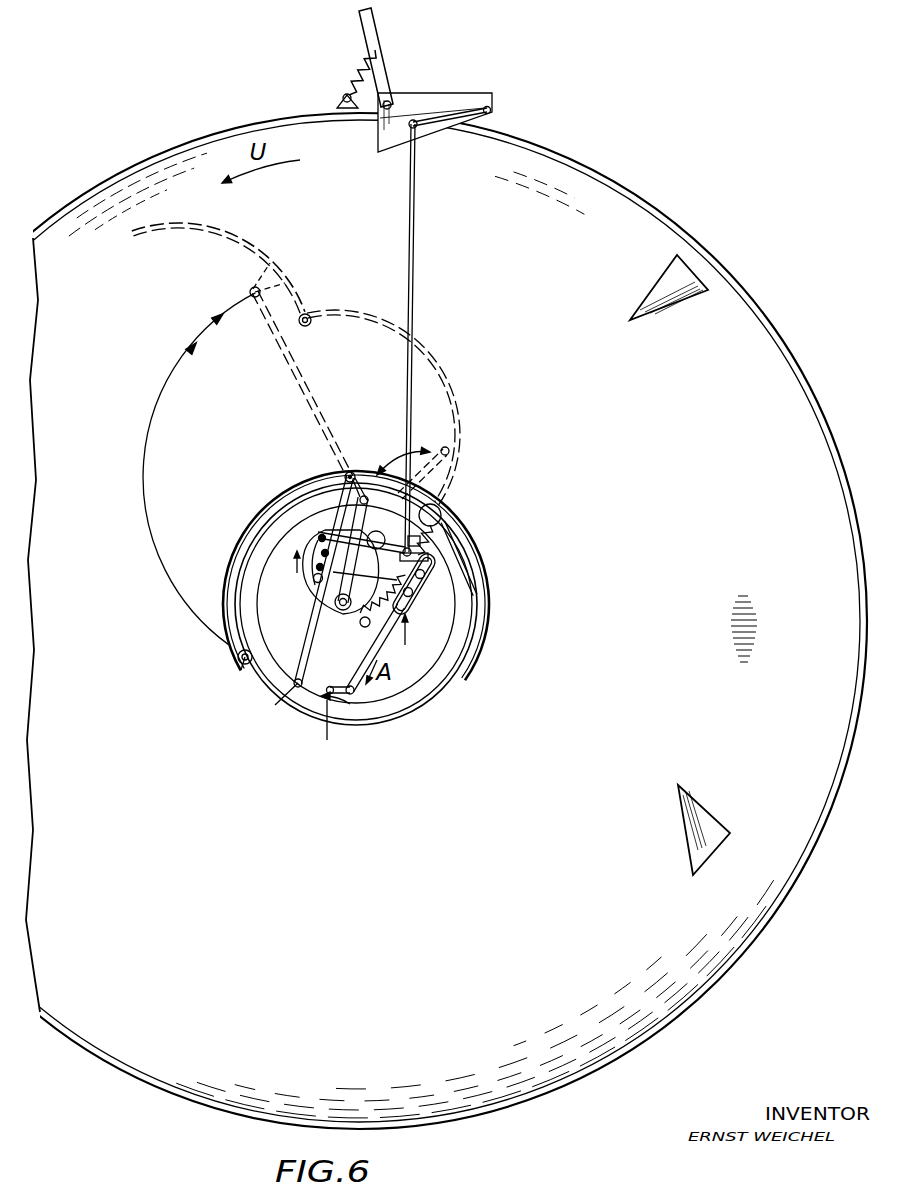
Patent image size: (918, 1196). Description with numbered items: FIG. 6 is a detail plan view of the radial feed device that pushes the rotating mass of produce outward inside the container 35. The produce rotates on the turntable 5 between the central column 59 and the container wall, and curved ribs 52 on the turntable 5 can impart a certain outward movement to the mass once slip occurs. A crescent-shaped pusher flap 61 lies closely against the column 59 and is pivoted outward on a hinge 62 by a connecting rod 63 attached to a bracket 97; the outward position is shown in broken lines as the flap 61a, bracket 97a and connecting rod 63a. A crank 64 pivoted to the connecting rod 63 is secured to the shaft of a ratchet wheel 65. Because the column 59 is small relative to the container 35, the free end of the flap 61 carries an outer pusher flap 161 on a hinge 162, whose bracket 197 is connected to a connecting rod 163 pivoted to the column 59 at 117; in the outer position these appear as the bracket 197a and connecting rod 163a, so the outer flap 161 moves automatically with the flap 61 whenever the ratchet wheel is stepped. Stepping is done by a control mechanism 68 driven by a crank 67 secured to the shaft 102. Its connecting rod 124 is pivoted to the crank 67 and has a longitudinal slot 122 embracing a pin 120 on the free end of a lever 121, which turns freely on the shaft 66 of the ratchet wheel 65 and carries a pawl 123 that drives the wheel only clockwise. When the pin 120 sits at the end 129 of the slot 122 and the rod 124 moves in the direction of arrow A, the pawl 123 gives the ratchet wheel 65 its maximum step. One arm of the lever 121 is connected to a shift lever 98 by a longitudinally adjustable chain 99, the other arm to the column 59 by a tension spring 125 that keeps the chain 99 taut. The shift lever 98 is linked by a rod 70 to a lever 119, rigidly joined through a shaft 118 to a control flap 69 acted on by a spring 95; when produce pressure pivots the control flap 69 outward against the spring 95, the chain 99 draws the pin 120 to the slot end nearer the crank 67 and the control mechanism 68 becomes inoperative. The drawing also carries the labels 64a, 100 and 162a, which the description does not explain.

The container 35 is at (780, 358).
The turntable 5 is at (660, 633).
The curved ribs 52 is at (668, 303).
The column 59 is at (452, 700).
The pusher flap 61 is at (238, 592).
The pusher flap in outward position 61a is at (437, 372).
The hinge 62 is at (440, 512).
The connecting rod 63 is at (342, 520).
The connecting rod in outward position 63a is at (440, 472).
The crank 64 is at (328, 594).
The lever arm 64a is at (423, 548).
The ratchet wheel 65 is at (334, 602).
The shaft of the ratchet wheel 66 is at (313, 580).
The crank 67 is at (348, 694).
The control mechanism 68 is at (418, 631).
The control flap 69 is at (446, 132).
The rod 70 is at (414, 232).
The spring 95 is at (352, 90).
The bracket 97 is at (364, 494).
The bracket in outward position 97a is at (449, 450).
The shift lever 98 is at (317, 533).
The longitudinally adjustable chain 99 is at (300, 555).
The cam plate 100 is at (333, 525).
The shaft 102 is at (327, 741).
The pivot on the column 117 is at (349, 472).
The shaft 118 is at (491, 112).
The lever 119 is at (455, 118).
The pin 120 is at (430, 578).
The lever 121 is at (361, 625).
The longitudinal slot 122 is at (415, 598).
The pawl 123 is at (420, 592).
The connecting rod 124 is at (381, 652).
The tension spring 125 is at (462, 537).
The end of the longitudinal slot 129 is at (433, 557).
The outer pusher flap 161 is at (220, 222).
The hinge 162 is at (238, 657).
The pin (swung position) 162a is at (307, 314).
The connecting rod 163 is at (309, 660).
The connecting rod in outer position 163a is at (300, 348).
The bracket 197 is at (276, 706).
The bracket in outer position 197a is at (250, 292).